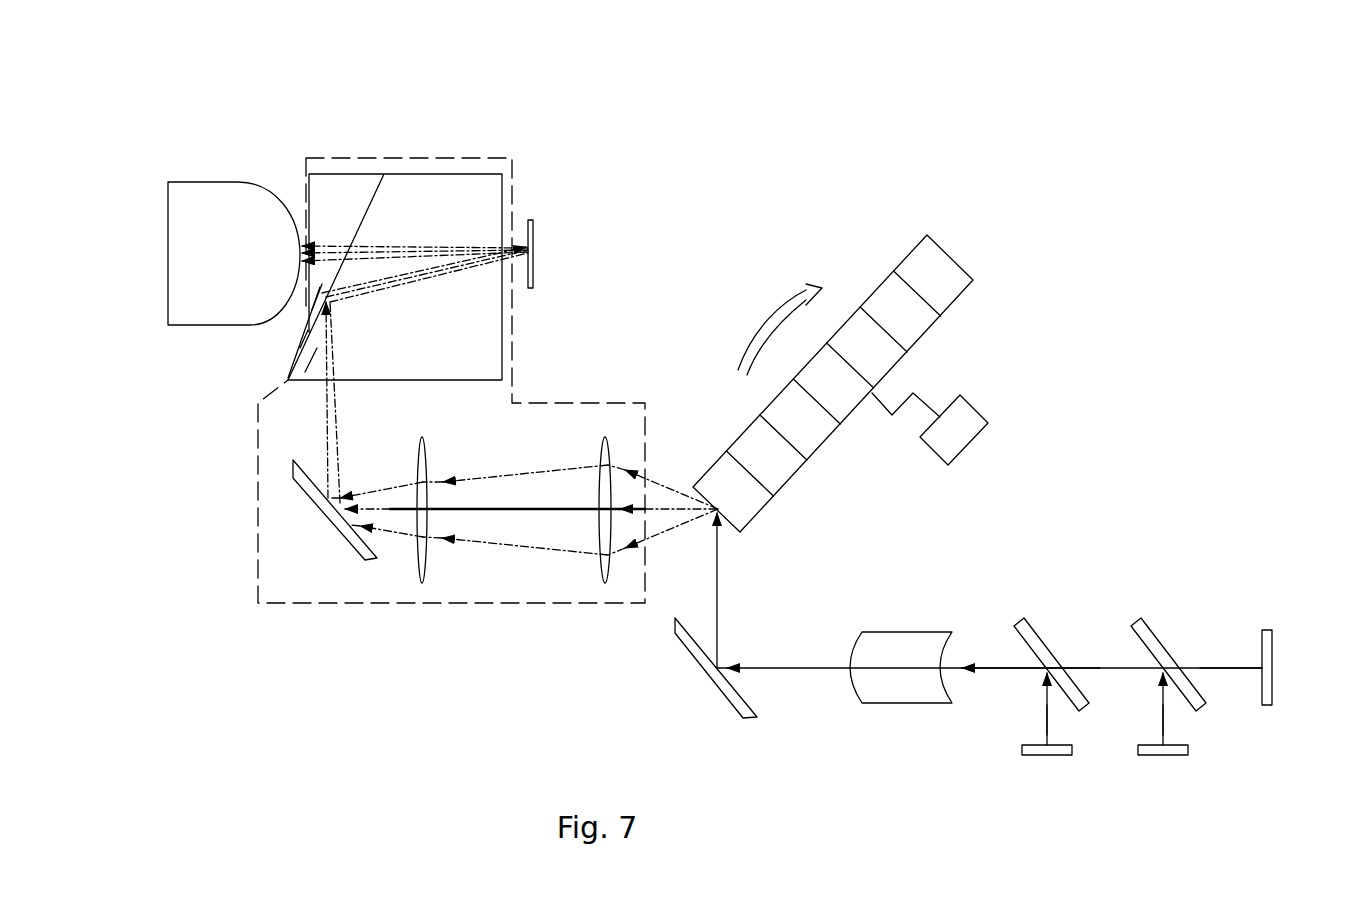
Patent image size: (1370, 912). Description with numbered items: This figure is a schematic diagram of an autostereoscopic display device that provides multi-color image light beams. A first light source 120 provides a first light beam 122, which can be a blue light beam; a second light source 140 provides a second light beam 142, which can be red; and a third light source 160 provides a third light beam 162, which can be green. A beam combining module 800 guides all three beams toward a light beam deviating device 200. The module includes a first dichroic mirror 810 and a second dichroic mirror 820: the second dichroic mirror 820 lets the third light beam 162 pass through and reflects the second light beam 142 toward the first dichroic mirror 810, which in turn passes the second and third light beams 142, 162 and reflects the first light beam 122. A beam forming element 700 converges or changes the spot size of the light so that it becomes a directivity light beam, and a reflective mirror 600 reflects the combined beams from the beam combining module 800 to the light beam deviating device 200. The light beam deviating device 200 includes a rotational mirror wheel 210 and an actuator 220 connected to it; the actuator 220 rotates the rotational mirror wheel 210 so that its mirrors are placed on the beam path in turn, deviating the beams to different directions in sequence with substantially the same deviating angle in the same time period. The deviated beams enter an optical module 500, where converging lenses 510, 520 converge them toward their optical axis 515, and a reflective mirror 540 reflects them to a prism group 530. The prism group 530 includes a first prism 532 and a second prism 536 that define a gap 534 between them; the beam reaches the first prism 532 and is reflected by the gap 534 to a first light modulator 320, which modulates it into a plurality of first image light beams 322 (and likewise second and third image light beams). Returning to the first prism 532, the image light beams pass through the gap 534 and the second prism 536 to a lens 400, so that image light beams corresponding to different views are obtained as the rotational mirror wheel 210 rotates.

The first light source 120 is at (1045, 755).
The first light beam 122 is at (1040, 719).
The second light source 140 is at (1165, 755).
The second light beam 142 is at (1156, 719).
The third light source 160 is at (1272, 668).
The third light beam 162 is at (1234, 672).
The light beam deviating device 200 is at (963, 383).
The rotational mirror wheel 210 is at (933, 268).
The actuator 220 is at (1010, 429).
The first light modulator 320 is at (533, 233).
The first image light beams 322 is at (407, 247).
The lens 400 is at (214, 233).
The optical module 500 is at (355, 158).
The converging lens 510 is at (603, 570).
The optical axis 515 is at (503, 513).
The converging lens 520 is at (423, 567).
The prism group 530 is at (135, 338).
The first prism 532 is at (317, 348).
The gap 534 is at (308, 330).
The second prism 536 is at (320, 287).
The reflective mirror 540 is at (350, 535).
The reflective mirror 600 is at (723, 685).
The beam forming element 700 is at (903, 683).
The beam combining module 800 is at (1110, 591).
The first dichroic mirror 810 is at (1027, 623).
The second dichroic mirror 820 is at (1168, 619).